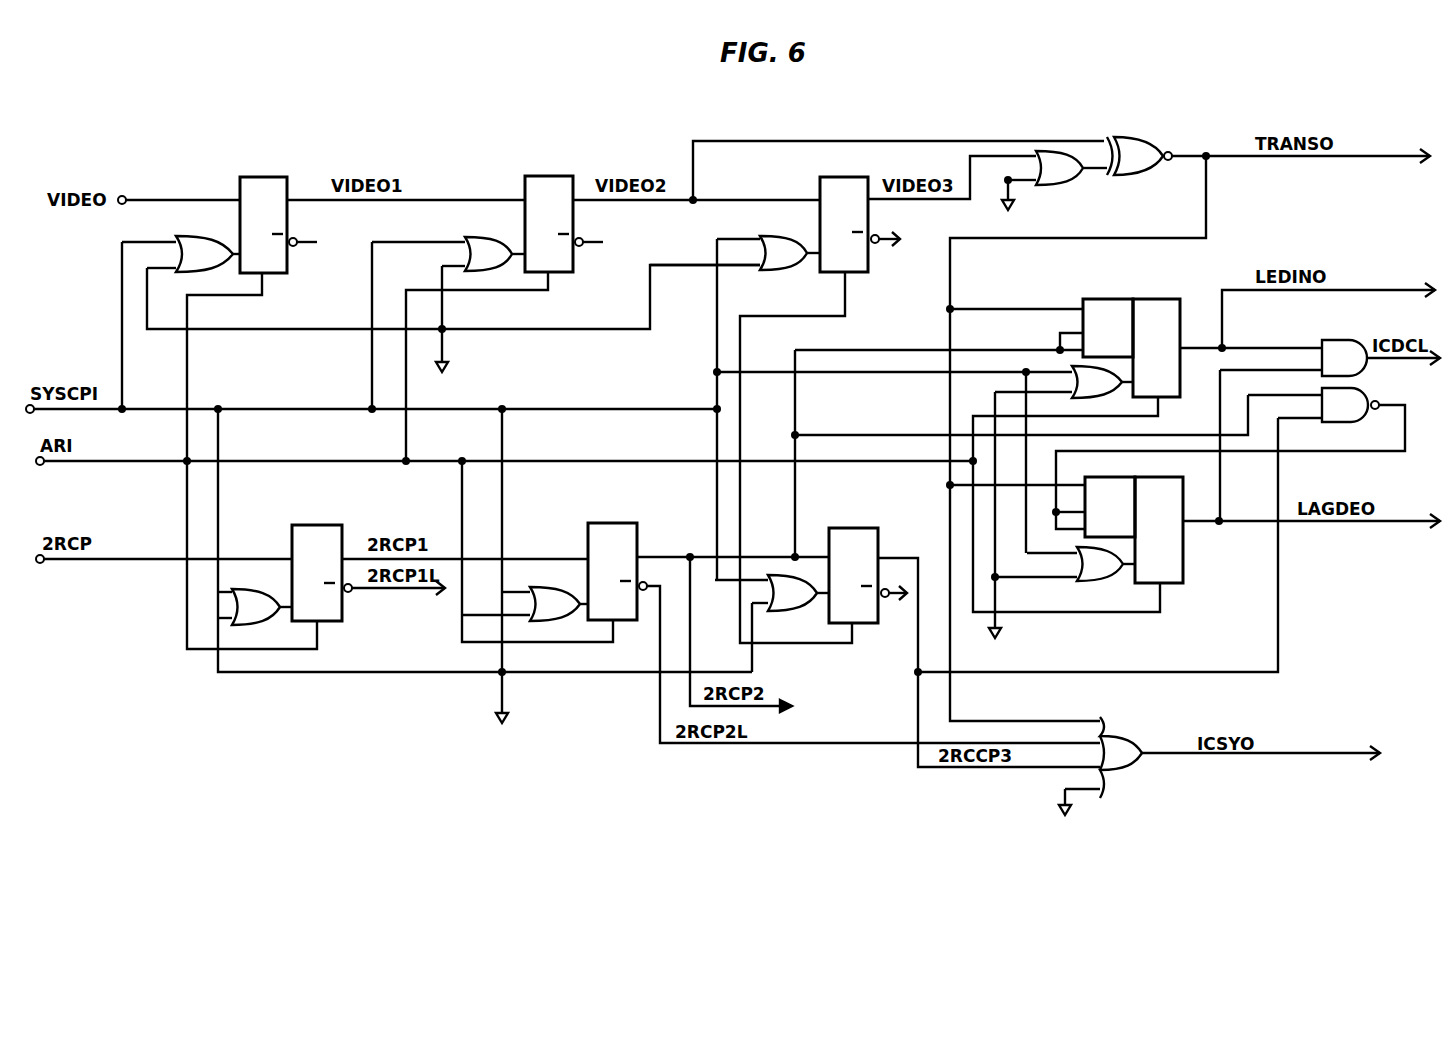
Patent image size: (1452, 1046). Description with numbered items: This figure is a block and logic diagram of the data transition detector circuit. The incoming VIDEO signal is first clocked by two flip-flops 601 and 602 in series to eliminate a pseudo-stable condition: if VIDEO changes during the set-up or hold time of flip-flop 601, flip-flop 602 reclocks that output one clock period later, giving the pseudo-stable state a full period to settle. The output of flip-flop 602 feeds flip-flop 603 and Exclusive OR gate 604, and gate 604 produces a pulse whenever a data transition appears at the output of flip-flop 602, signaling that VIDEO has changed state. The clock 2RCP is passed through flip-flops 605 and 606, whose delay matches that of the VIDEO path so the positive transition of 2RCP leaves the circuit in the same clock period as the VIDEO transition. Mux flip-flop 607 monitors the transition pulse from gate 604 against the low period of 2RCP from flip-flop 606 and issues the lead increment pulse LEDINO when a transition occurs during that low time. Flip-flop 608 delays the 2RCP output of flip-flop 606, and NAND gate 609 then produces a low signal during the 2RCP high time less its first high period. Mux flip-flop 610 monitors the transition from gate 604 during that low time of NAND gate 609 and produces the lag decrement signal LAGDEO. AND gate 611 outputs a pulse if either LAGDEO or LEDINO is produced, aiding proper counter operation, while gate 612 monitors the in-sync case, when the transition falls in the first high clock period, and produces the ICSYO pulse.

The flip-flop 601 is at (275, 176).
The flip-flop 602 is at (553, 176).
The flip-flop 603 is at (815, 178).
The Exclusive OR gate 604 is at (1079, 126).
The flip-flop 605 is at (303, 525).
The flip-flop 606 is at (587, 536).
The mux flip-flop 607 is at (1097, 297).
The flip-flop 608 is at (847, 528).
The NAND gate 609 is at (1340, 425).
The mux flip-flop 610 is at (1185, 560).
The AND gate 611 is at (1325, 340).
The gate 612 is at (1125, 773).